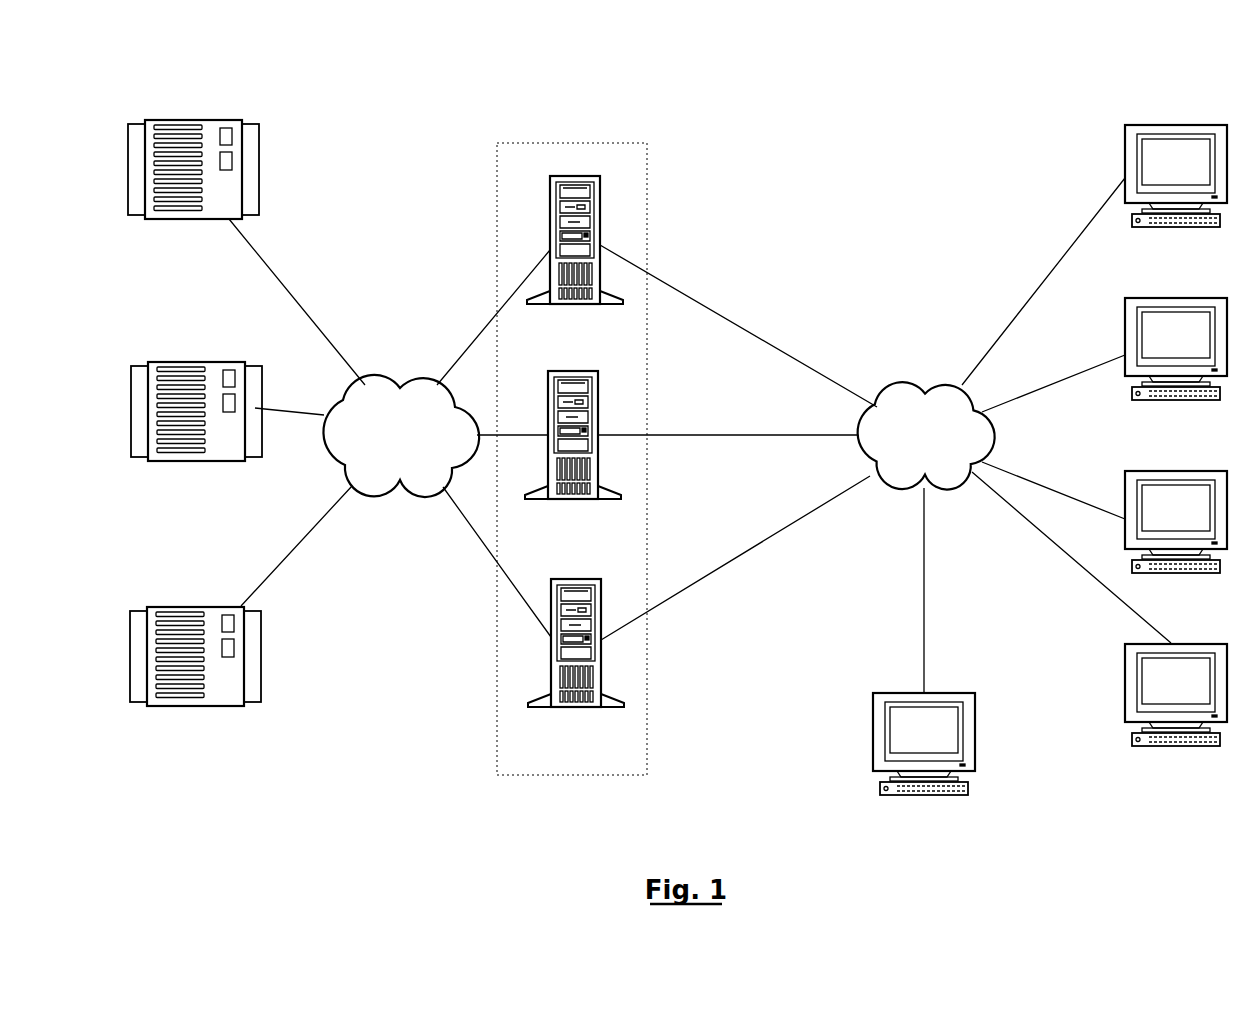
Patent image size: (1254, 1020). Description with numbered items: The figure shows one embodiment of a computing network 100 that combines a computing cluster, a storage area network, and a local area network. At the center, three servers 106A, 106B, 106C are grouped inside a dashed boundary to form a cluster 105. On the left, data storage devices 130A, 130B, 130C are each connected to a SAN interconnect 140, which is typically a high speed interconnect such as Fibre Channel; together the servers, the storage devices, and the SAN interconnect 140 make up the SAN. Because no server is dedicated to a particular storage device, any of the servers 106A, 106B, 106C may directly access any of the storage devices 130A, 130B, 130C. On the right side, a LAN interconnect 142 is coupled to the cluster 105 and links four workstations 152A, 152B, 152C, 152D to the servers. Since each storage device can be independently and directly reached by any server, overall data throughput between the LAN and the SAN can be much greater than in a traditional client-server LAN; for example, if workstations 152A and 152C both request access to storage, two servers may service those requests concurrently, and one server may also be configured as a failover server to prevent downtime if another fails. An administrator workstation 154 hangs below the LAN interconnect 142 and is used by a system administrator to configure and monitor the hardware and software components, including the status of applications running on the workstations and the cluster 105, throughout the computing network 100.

The computing network 100 is at (772, 125).
The cluster 105 is at (497, 732).
The server 106A is at (575, 257).
The server 106B is at (573, 451).
The server 106C is at (576, 659).
The data storage device 130A is at (193, 187).
The data storage device 130B is at (196, 426).
The data storage device 130C is at (195, 673).
The SAN interconnect 140 is at (381, 466).
The LAN interconnect 142 is at (906, 466).
The workstation 152A is at (1176, 192).
The workstation 152B is at (1176, 365).
The workstation 152C is at (1176, 538).
The workstation 152D is at (1176, 711).
The administrator workstation 154 is at (924, 760).